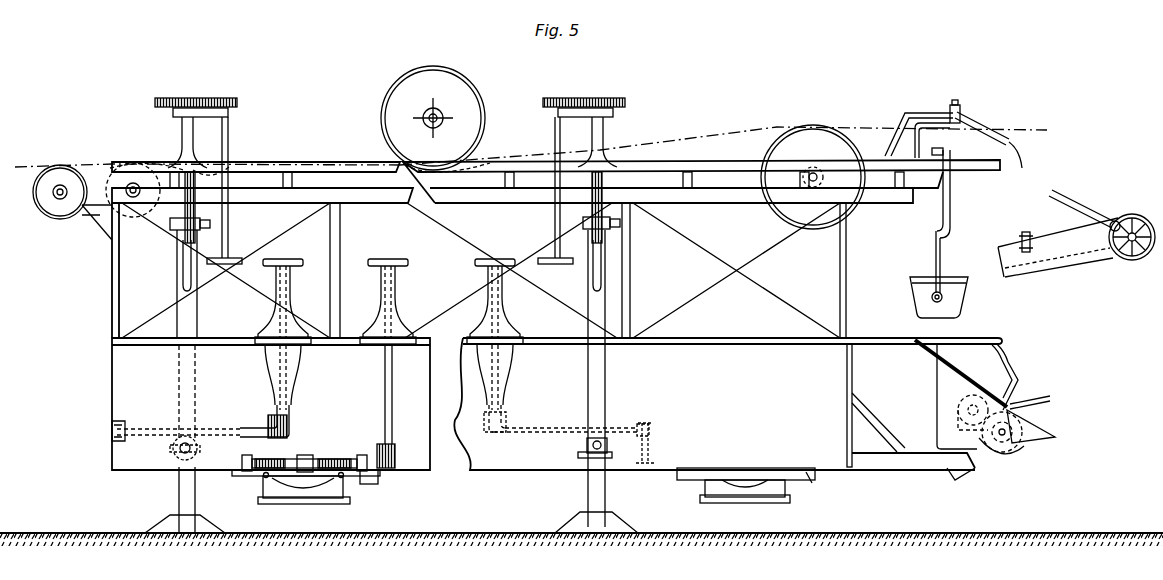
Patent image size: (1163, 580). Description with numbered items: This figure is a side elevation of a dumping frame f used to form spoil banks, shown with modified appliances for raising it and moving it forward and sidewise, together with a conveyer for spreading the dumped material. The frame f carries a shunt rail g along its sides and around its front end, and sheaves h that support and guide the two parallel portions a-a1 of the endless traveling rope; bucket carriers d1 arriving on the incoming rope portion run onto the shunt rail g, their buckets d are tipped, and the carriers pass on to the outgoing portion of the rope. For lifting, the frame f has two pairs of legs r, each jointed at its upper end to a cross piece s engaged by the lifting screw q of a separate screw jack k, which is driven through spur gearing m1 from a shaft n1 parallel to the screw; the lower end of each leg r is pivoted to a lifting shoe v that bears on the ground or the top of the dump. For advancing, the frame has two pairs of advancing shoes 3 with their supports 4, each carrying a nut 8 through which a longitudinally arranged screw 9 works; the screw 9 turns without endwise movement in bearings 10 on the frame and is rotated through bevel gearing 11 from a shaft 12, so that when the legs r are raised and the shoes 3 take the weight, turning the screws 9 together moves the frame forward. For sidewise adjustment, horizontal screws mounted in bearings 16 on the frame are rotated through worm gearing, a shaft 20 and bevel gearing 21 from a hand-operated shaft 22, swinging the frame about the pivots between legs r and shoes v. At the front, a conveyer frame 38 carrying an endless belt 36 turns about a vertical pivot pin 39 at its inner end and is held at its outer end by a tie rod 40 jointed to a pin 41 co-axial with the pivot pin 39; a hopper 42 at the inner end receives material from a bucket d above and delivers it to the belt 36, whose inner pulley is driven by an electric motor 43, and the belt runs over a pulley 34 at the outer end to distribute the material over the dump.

The advancing shoe 3 is at (333, 500).
The trough support 4 is at (814, 487).
The nut 8 is at (312, 458).
The longitudinally arranged screw 9 is at (340, 463).
The bearing 10 is at (240, 463).
The bevel gearing 11 is at (388, 469).
The shaft 12 is at (389, 390).
The bearing 16 is at (178, 428).
The shaft 20 is at (245, 431).
The bevel gearing 21 is at (289, 426).
The shaft 22 is at (290, 382).
The wheel 34 is at (1135, 214).
The endless belt 36 is at (1055, 230).
The conveyer frame 38 is at (1070, 259).
The vertical pivot pin 39 is at (956, 470).
The tie rod 40 is at (1054, 194).
The pin 41 is at (962, 109).
The hopper 42 is at (950, 364).
The electric motor 43 is at (956, 409).
The parallel portions of endless traveling rope a-a1 is at (207, 152).
The bucket d is at (915, 291).
The bucket carrier d1 is at (952, 152).
The frame f is at (581, 353).
The shunt rail g is at (716, 165).
The sheave h is at (63, 219).
The screw jack k is at (182, 140).
The spur gearing m1 is at (208, 97).
The shaft n1 is at (229, 128).
The lifting screw q is at (196, 210).
The leg r is at (190, 312).
The cross piece s is at (178, 234).
The lifting shoe v is at (204, 526).